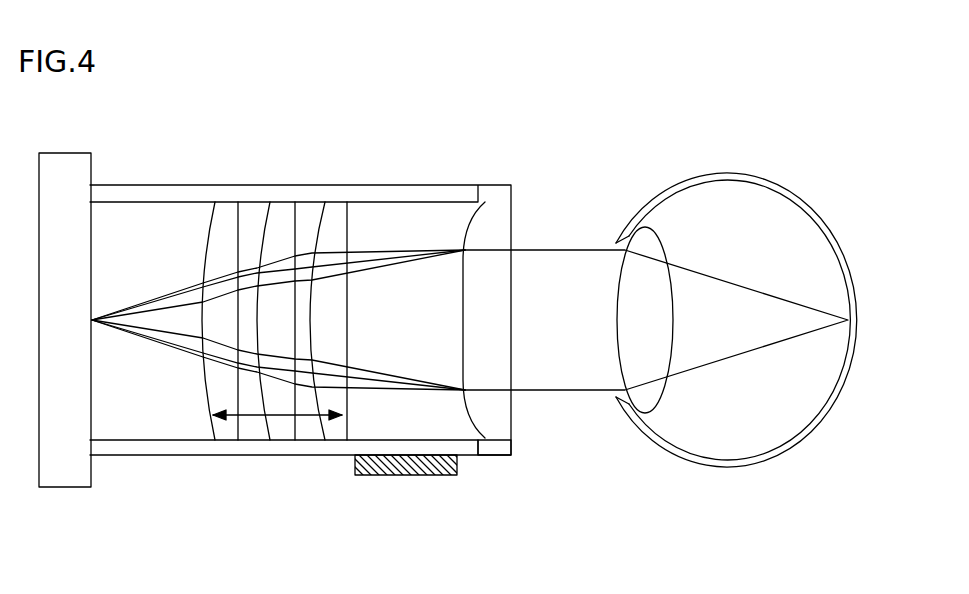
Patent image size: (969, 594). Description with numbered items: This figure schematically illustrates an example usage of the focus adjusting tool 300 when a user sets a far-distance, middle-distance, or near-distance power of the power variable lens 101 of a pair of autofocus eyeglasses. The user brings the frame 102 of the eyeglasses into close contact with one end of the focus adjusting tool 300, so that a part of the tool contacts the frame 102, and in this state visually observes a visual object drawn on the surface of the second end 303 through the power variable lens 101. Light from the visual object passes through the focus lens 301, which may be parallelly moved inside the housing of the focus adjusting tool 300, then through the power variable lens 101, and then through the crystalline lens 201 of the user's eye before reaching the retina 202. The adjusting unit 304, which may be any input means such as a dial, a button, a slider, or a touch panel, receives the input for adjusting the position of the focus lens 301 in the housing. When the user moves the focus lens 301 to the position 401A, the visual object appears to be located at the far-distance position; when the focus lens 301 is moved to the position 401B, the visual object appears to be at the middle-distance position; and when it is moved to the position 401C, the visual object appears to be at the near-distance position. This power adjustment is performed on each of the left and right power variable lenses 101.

The focus adjusting tool 300 is at (415, 190).
The second end 303 is at (63, 168).
The focus lens 301 is at (282, 327).
The position 401A is at (337, 452).
The position 401B is at (282, 452).
The position 401C is at (227, 452).
The power variable lens 101 is at (498, 225).
The frame 102 is at (493, 457).
The adjusting unit 304 is at (422, 477).
The crystalline lens 201 is at (648, 238).
The retina 202 is at (838, 293).